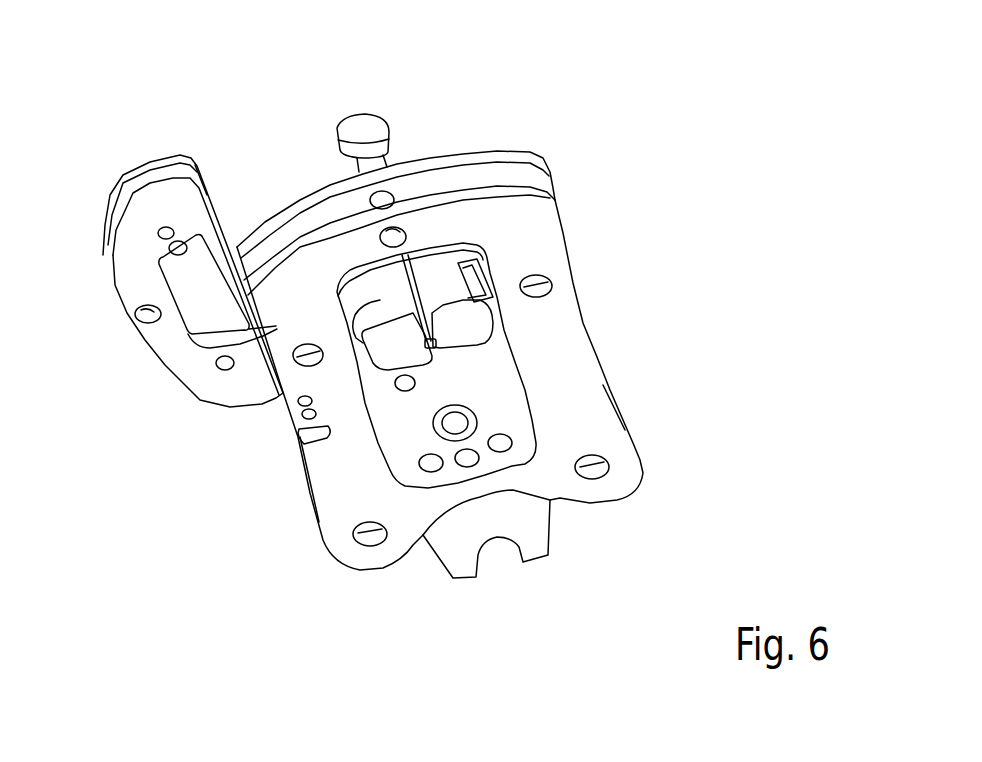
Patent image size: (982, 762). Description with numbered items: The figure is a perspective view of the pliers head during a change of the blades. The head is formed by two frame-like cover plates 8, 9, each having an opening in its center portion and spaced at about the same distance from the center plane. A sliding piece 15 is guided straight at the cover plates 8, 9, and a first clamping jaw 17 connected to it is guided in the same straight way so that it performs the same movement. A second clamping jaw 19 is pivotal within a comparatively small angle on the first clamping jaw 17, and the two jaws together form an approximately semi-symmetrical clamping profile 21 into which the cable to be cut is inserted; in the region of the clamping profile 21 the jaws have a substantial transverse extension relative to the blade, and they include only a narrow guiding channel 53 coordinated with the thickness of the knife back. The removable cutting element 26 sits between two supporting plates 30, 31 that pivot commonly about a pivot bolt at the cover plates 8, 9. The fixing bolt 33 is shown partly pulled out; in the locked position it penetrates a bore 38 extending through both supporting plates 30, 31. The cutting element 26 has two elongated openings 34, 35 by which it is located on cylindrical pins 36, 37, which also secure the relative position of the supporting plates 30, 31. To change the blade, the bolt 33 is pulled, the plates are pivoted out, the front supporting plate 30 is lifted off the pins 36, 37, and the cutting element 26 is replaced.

The cover plate 8 is at (530, 240).
The cover plate 9 is at (498, 177).
The sliding piece 15 is at (525, 517).
The first clamping jaw 17 is at (377, 342).
The second clamping jaw 19 is at (468, 322).
The clamping profile 21 is at (440, 345).
The cutting element 26 is at (183, 283).
The supporting plate 30 is at (124, 222).
The supporting plate 31 is at (165, 225).
The fixing bolt 33 is at (371, 120).
The elongated opening 34 is at (193, 338).
The elongated opening 35 is at (196, 164).
The cylindrical pin 36 is at (217, 369).
The cylindrical pin 37 is at (181, 240).
The bore 38 is at (143, 321).
The guiding channel 53 is at (445, 240).